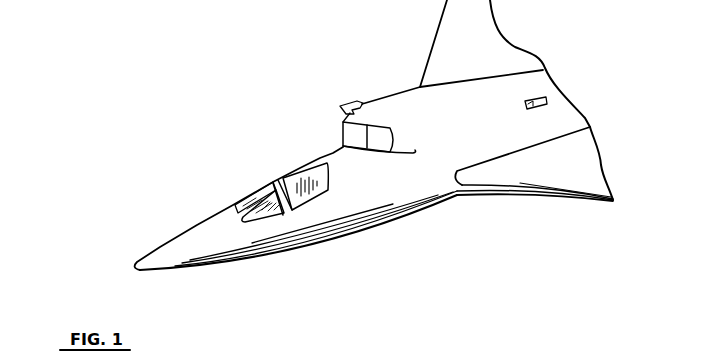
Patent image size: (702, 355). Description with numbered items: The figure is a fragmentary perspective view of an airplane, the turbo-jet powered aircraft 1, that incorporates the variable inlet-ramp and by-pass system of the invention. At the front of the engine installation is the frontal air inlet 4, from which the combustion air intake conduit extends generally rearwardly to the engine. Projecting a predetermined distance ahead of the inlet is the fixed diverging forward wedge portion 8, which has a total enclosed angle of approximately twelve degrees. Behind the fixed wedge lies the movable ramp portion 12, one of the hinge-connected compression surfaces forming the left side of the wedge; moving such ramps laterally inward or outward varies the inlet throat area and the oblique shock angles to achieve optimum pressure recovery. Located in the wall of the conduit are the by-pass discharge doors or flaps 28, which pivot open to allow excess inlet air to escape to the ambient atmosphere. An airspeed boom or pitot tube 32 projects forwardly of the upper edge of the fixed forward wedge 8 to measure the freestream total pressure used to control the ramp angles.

The aircraft 1 is at (333, 79).
The frontal air inlet 4 is at (374, 156).
The fixed diverging forward wedge portion 8 is at (350, 133).
The movable ramp portion 12 is at (378, 137).
The discharge doors or flaps 28 is at (527, 104).
The airspeed boom or pitot tube 32 is at (340, 105).